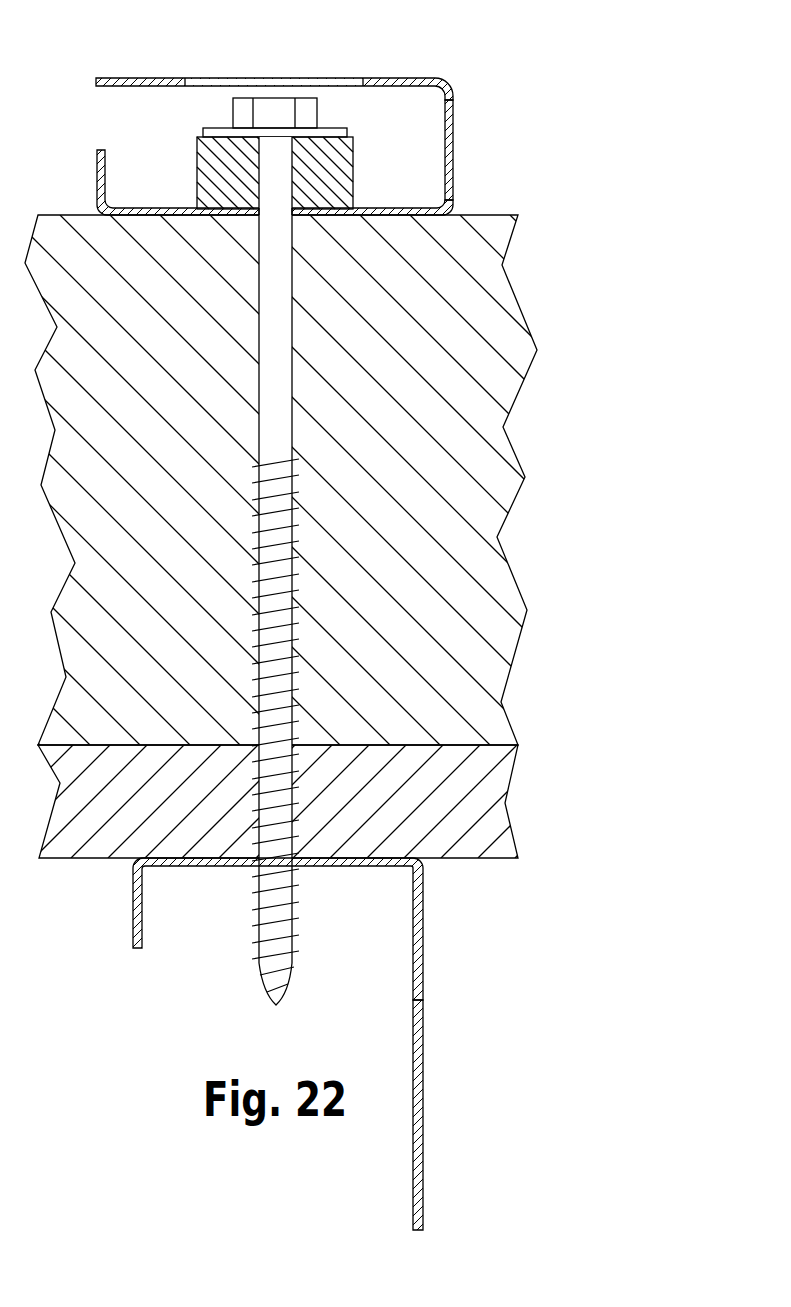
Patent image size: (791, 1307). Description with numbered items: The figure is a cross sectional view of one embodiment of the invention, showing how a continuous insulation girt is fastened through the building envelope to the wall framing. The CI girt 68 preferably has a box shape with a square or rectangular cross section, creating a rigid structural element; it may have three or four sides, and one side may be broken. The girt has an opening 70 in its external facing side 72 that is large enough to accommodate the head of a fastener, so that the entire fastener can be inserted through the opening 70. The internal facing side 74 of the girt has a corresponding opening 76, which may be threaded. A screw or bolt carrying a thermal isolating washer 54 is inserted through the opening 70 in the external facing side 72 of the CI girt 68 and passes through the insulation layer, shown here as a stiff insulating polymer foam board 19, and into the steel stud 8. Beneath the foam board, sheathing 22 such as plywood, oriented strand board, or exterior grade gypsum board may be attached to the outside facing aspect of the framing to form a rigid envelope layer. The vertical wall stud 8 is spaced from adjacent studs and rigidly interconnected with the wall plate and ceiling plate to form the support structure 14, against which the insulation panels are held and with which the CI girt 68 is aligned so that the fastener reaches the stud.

The vertical wall stud 8 is at (424, 1116).
The support structure 14 is at (424, 980).
The insulating polymer foam board 19 is at (514, 503).
The sheathing 22 is at (506, 803).
The thermal isolating washer 54 is at (354, 160).
The CI girt 68 is at (454, 142).
The opening 70 is at (276, 78).
The external facing side 72 is at (403, 78).
The internal facing side 74 is at (136, 216).
The corresponding opening 76 is at (303, 216).